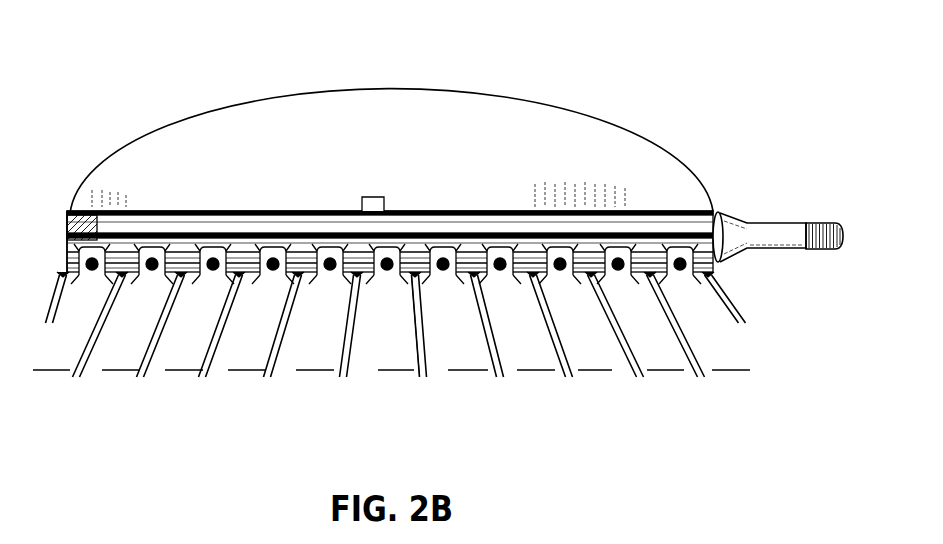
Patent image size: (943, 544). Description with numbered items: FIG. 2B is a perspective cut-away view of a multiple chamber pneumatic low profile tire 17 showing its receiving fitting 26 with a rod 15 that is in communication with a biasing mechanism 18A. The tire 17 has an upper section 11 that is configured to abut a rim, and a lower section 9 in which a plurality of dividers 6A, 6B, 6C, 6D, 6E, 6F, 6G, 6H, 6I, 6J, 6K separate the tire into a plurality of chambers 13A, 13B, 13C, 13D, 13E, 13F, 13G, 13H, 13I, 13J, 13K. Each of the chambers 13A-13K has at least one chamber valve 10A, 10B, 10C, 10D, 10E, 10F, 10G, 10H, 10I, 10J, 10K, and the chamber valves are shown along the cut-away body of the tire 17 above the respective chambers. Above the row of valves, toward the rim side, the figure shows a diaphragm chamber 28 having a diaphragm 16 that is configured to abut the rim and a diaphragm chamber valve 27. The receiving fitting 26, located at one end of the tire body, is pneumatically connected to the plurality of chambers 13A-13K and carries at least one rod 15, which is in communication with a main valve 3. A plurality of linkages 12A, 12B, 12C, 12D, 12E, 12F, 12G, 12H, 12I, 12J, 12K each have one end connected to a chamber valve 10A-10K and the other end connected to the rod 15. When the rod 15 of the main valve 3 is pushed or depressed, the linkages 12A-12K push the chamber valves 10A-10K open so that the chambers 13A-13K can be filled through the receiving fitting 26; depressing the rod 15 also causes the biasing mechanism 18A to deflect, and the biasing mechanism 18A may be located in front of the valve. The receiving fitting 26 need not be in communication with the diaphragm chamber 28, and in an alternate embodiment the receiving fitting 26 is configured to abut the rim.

The main valve 3 is at (740, 230).
The lower section 9 is at (755, 337).
The upper section 11 is at (587, 118).
The rod 15 is at (722, 212).
The diaphragm 16 is at (530, 90).
The tire 17 is at (88, 118).
The receiving fitting 26 is at (723, 255).
The diaphragm chamber valve 27 is at (373, 198).
The diaphragm chamber 28 is at (470, 210).
The biasing mechanism 18A is at (93, 245).
The chamber valve 10A is at (92, 275).
The chamber valve 10B is at (152, 275).
The chamber valve 10C is at (213, 275).
The chamber valve 10D is at (273, 275).
The chamber valve 10E is at (330, 275).
The chamber valve 10F is at (387, 275).
The chamber valve 10G is at (443, 275).
The chamber valve 10H is at (500, 275).
The chamber valve 10I is at (560, 275).
The chamber valve 10J is at (618, 275).
The chamber valve 10K is at (680, 275).
The linkage 12A is at (92, 246).
The linkage 12B is at (152, 246).
The linkage 12C is at (213, 246).
The linkage 12D is at (273, 246).
The linkage 12E is at (330, 246).
The linkage 12F is at (387, 246).
The linkage 12G is at (443, 246).
The linkage 12H is at (500, 246).
The linkage 12I is at (560, 246).
The linkage 12J is at (618, 246).
The linkage 12K is at (680, 246).
The divider 6A is at (98, 331).
The divider 6B is at (160, 331).
The divider 6C is at (223, 331).
The divider 6D is at (286, 331).
The divider 6E is at (354, 331).
The divider 6F is at (421, 341).
The divider 6G is at (425, 331).
The divider 6H is at (490, 331).
The divider 6I is at (553, 331).
The divider 6J is at (616, 331).
The divider 6K is at (680, 331).
The chamber 13A is at (51, 359).
The chamber 13B is at (120, 359).
The chamber 13C is at (184, 359).
The chamber 13D is at (247, 359).
The chamber 13E is at (315, 359).
The chamber 13F is at (396, 359).
The chamber 13G is at (468, 359).
The chamber 13H is at (536, 359).
The chamber 13I is at (595, 359).
The chamber 13J is at (665, 359).
The chamber 13K is at (731, 359).